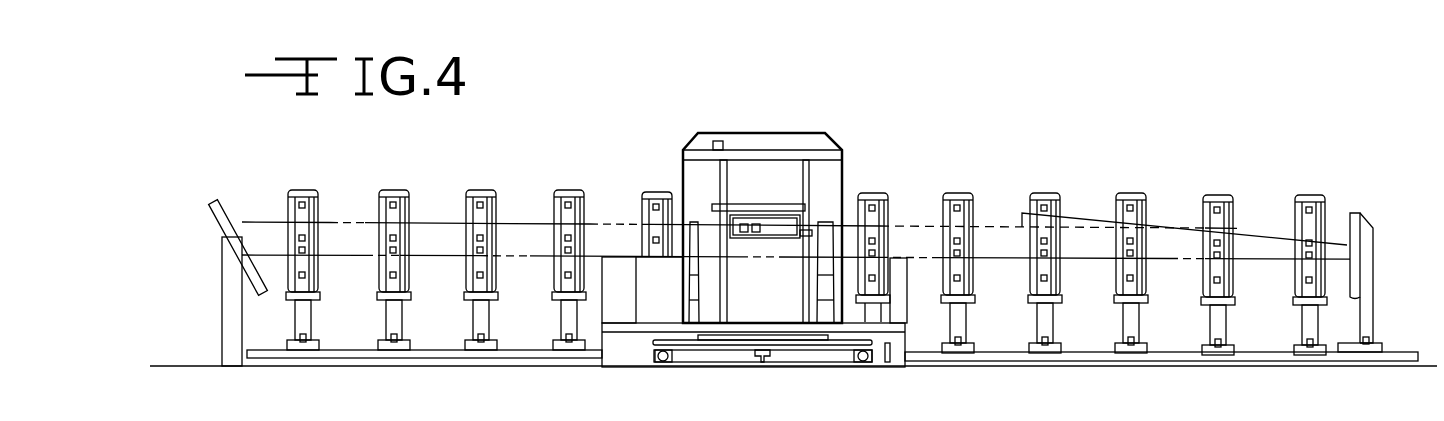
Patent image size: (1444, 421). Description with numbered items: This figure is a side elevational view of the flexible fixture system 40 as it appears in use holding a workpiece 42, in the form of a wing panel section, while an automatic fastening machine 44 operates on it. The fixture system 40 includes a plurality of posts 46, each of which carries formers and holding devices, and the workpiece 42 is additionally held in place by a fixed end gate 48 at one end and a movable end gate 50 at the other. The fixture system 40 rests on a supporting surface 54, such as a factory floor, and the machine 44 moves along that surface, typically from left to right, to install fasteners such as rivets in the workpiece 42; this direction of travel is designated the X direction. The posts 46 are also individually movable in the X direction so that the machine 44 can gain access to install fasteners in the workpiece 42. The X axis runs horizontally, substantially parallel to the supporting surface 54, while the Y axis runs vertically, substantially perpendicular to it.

The flexible fixture system 40 is at (446, 175).
The workpiece 42 is at (521, 220).
The automatic fastening machine 44 is at (854, 155).
The posts 46 is at (380, 205).
The fixed end gate 48 is at (233, 201).
The movable end gate 50 is at (1373, 232).
The supporting surface 54 is at (165, 365).